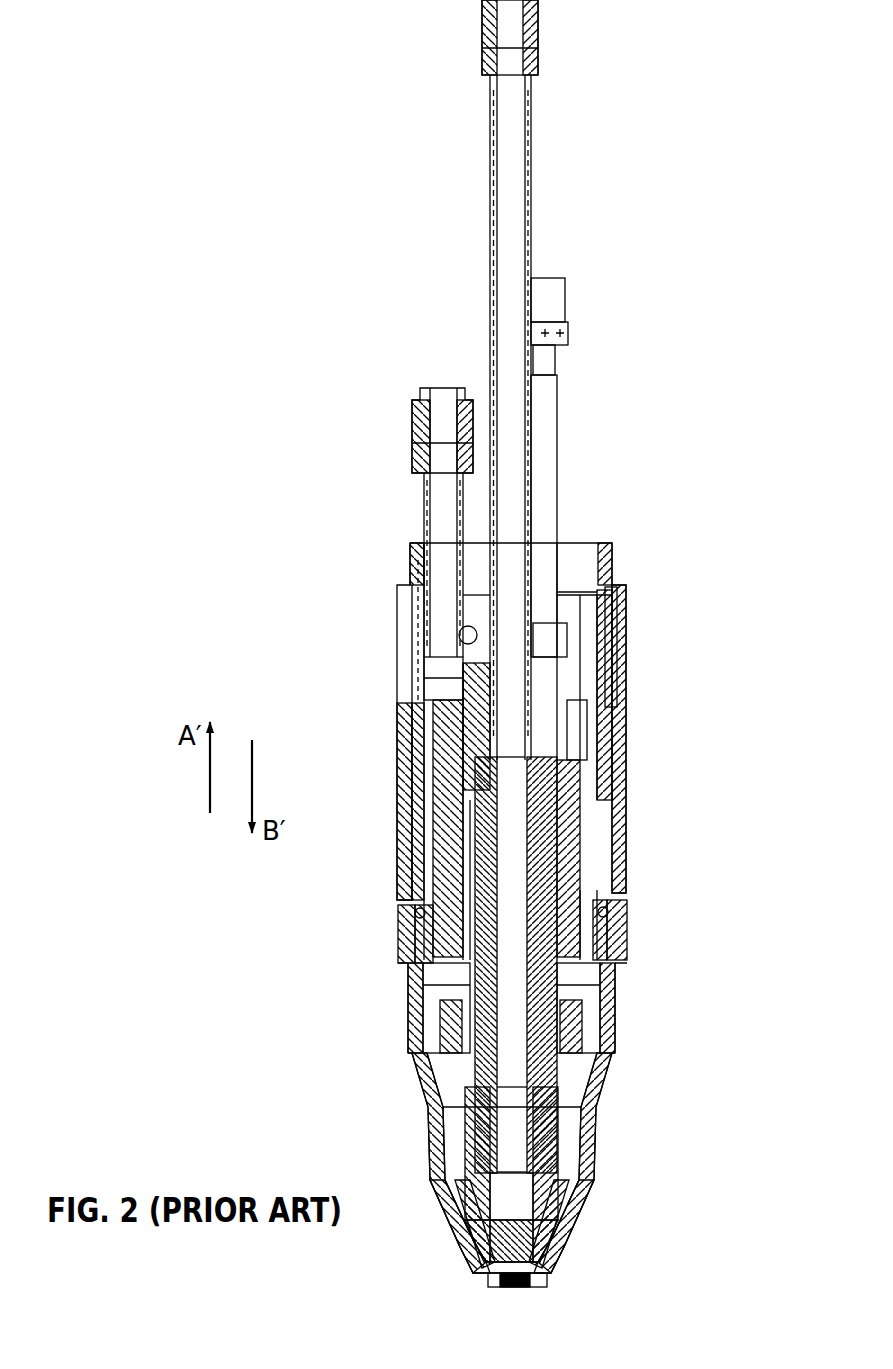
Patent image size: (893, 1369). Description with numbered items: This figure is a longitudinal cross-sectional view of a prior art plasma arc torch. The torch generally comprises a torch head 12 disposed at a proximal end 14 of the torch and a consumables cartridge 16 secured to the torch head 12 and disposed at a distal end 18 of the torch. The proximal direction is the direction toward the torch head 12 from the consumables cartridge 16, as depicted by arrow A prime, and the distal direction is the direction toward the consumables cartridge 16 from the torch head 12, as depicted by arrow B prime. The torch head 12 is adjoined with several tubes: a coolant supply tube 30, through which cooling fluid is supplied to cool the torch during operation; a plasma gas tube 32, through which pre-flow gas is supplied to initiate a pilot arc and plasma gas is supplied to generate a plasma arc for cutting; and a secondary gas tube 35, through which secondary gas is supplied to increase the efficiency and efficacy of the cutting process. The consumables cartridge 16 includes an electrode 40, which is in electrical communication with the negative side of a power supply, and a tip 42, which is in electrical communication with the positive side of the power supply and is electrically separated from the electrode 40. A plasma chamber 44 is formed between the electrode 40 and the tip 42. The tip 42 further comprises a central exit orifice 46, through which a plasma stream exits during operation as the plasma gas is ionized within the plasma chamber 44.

The torch head 12 is at (508, 753).
The proximal end 14 is at (384, 615).
The consumables cartridge 16 is at (637, 1001).
The distal end 18 is at (506, 1164).
The coolant supply tube 30 is at (490, 165).
The plasma gas tube 32 is at (553, 433).
The secondary gas tube 35 is at (420, 513).
The electrode 40 is at (530, 1225).
The tip 42 is at (555, 1276).
The plasma chamber 44 is at (570, 831).
The central exit orifice 46 is at (478, 1274).